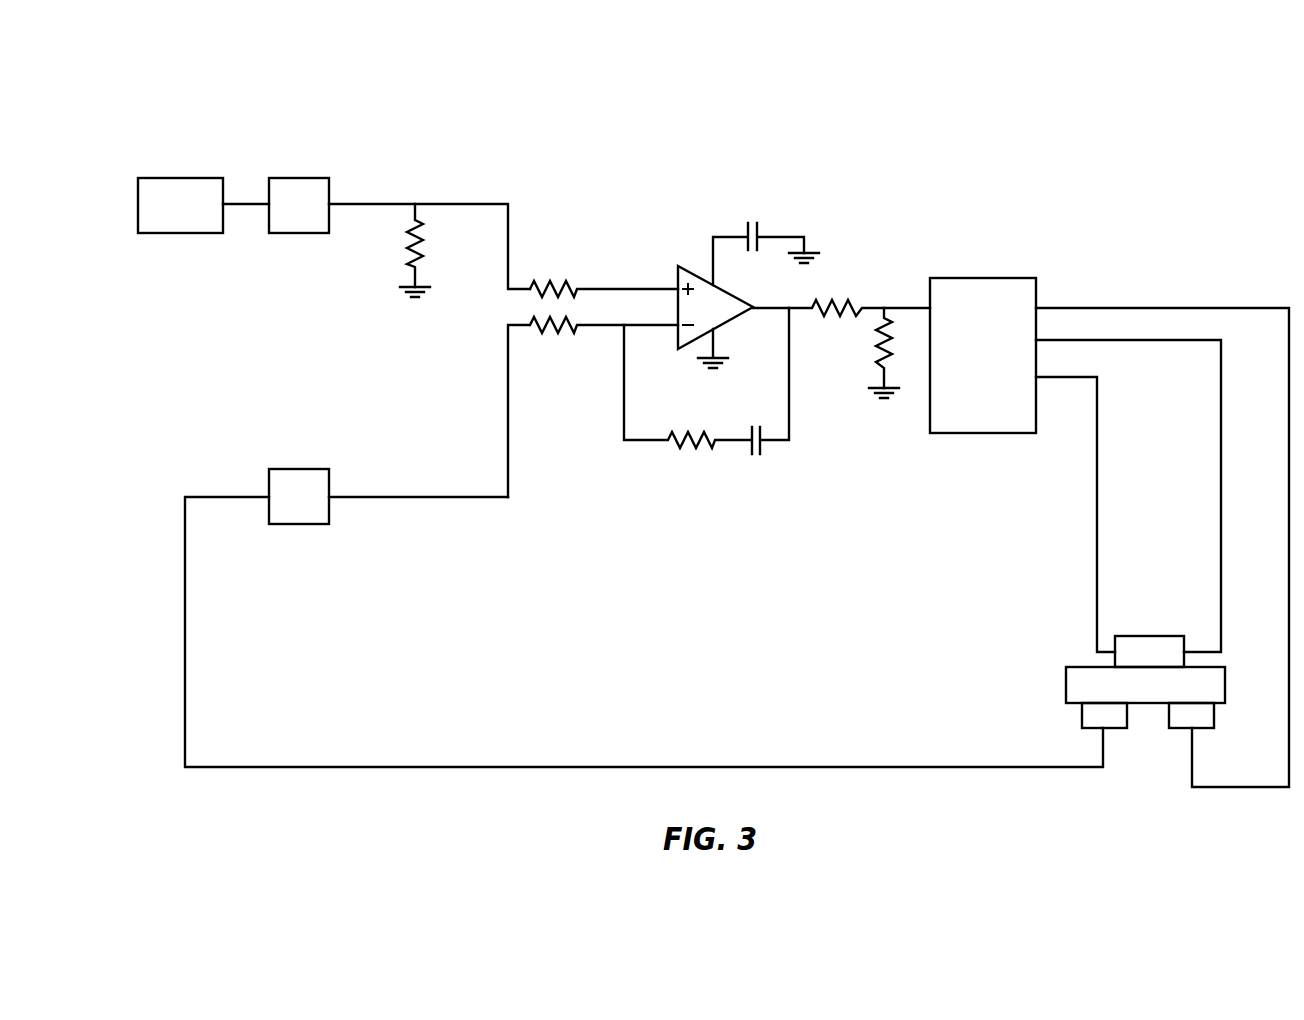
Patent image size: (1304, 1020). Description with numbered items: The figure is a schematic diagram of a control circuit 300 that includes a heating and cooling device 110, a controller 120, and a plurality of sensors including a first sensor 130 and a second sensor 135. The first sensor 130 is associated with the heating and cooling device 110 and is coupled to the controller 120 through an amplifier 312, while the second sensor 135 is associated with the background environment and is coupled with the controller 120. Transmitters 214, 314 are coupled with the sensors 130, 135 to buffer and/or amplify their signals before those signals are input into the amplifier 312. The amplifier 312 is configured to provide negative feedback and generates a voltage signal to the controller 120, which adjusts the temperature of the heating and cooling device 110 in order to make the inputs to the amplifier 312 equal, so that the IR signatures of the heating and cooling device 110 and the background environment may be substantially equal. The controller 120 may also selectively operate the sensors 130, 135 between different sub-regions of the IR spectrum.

The control circuit 300 is at (902, 90).
The second sensor 135 is at (175, 233).
The transmitter 214 is at (287, 178).
The amplifier 312 is at (696, 210).
The controller 120 is at (983, 355).
The transmitter 314 is at (305, 524).
The heating and cooling device 110 is at (1151, 636).
The first sensor 130 is at (1077, 715).